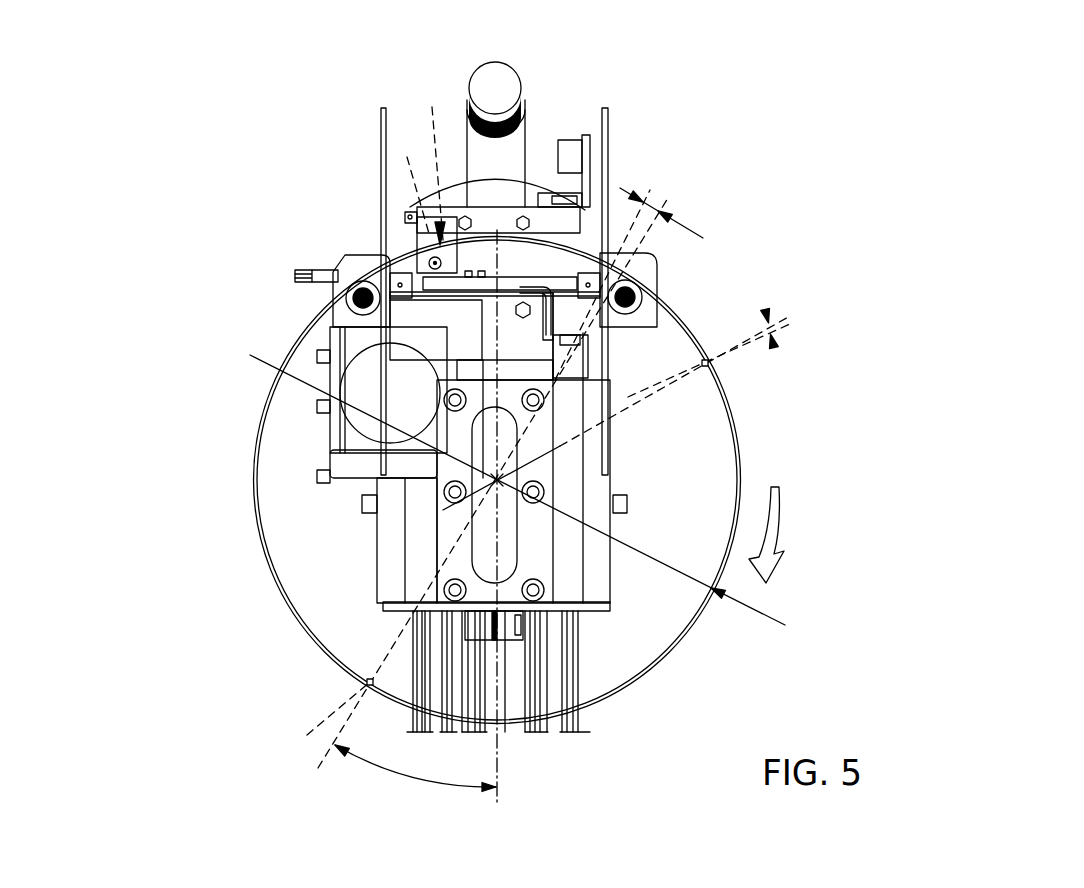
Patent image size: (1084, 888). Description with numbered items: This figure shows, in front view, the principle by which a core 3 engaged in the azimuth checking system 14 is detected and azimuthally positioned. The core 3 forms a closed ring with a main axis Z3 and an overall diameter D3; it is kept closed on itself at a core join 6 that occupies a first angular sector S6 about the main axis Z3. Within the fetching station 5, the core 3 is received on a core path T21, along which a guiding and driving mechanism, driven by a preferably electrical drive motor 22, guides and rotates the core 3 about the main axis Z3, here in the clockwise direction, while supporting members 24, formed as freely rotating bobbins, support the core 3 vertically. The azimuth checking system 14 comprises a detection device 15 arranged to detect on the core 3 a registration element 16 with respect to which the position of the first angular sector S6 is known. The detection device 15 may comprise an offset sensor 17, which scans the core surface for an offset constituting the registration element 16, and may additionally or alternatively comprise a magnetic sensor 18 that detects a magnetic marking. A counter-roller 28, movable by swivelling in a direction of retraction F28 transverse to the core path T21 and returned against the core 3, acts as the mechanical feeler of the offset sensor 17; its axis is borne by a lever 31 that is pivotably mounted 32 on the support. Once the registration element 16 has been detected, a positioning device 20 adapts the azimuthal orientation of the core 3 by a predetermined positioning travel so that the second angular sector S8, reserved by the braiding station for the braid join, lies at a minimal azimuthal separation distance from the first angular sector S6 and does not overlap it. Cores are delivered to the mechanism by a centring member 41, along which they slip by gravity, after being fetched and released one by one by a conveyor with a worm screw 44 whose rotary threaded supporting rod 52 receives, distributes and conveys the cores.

The core 3 is at (258, 490).
The fetching station 5 is at (228, 143).
The azimuth checking system 14 is at (162, 262).
The detection device 15 is at (407, 213).
The core join 6 is at (783, 380).
The registration element 16 is at (554, 479).
The offset sensor 17 is at (495, 284).
The magnetic sensor 18 is at (311, 290).
The positioning device 20 is at (482, 224).
The core path T21 is at (584, 252).
The drive motor 22 is at (444, 338).
The supporting members 24 is at (348, 298).
The counter-roller 28 is at (430, 245).
The direction of retraction F28 is at (429, 262).
The lever 31 is at (447, 358).
The pivot mounting 32 is at (567, 333).
The centring member 41 is at (383, 116).
The worm screw 44 is at (523, 97).
The threaded supporting rod 52 is at (498, 78).
The main axis Z3 is at (495, 483).
The overall diameter D3 is at (518, 490).
The first angular sector S6 is at (786, 345).
The second angular sector S8 is at (667, 213).